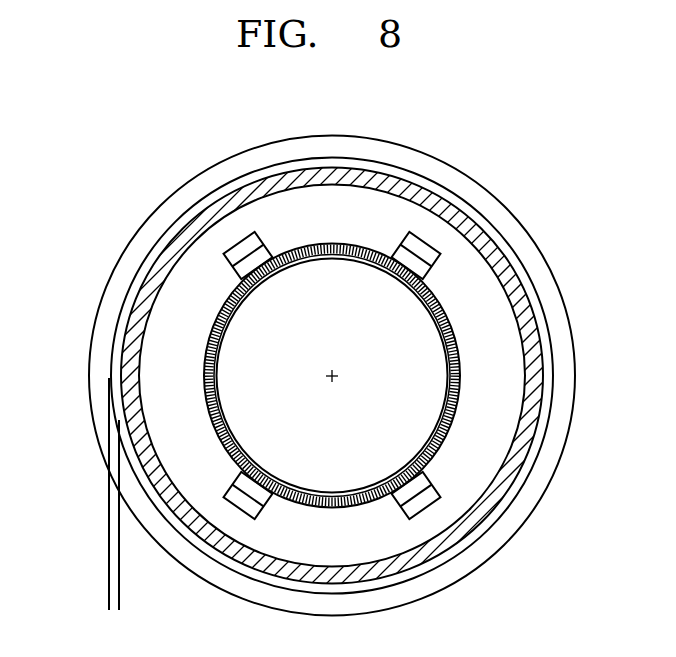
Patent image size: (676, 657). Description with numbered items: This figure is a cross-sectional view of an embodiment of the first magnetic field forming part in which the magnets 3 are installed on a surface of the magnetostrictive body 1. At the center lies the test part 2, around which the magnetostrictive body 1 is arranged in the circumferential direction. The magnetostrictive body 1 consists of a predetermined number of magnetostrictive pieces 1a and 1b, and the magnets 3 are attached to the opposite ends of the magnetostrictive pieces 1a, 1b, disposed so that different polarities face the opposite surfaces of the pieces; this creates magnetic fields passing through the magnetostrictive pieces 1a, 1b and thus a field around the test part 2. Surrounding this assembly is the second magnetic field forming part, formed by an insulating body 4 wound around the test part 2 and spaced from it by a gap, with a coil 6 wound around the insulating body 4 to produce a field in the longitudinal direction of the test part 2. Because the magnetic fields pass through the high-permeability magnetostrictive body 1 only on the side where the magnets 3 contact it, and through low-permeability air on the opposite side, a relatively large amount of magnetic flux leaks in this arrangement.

The magnetostrictive body 1 is at (33, 225).
The magnetostrictive piece 1a is at (303, 243).
The magnetostrictive piece 1b is at (305, 493).
The test part 2 is at (408, 312).
The magnet 3 is at (428, 512).
The insulating body 4 is at (463, 210).
The coil 6 is at (416, 150).